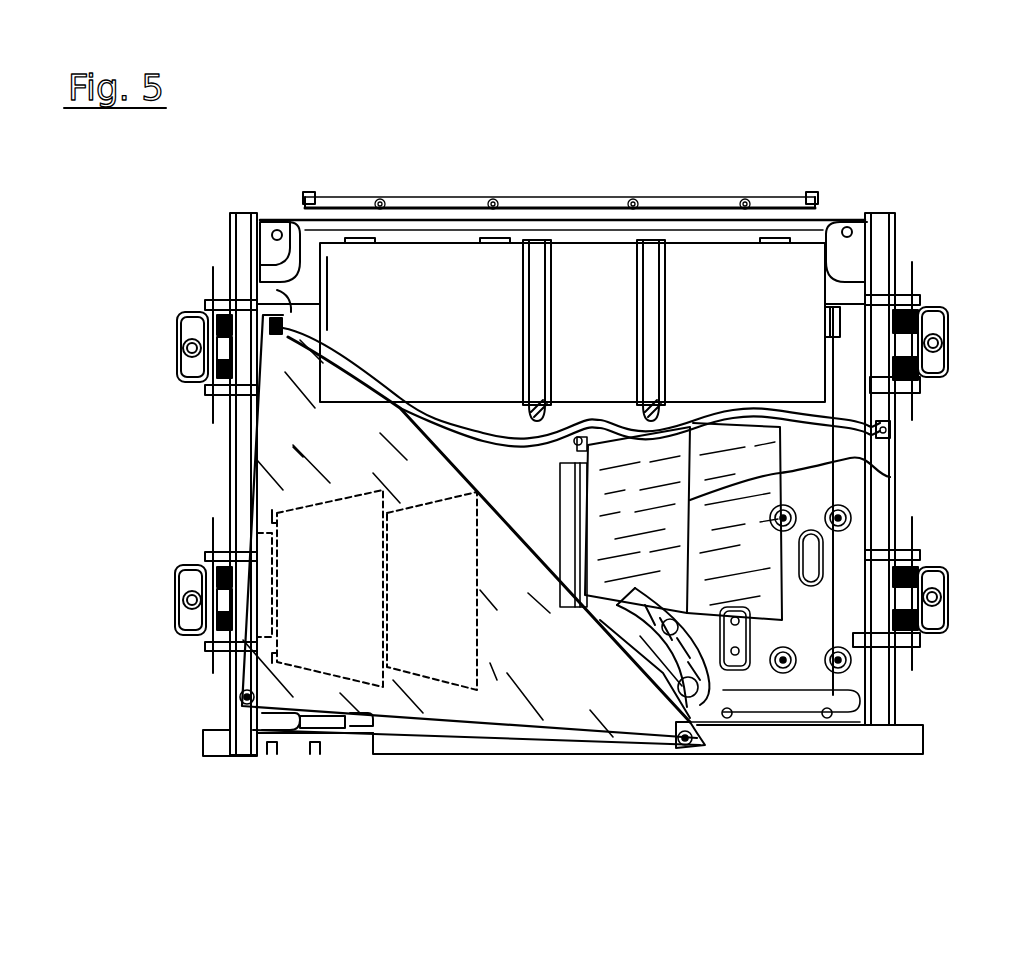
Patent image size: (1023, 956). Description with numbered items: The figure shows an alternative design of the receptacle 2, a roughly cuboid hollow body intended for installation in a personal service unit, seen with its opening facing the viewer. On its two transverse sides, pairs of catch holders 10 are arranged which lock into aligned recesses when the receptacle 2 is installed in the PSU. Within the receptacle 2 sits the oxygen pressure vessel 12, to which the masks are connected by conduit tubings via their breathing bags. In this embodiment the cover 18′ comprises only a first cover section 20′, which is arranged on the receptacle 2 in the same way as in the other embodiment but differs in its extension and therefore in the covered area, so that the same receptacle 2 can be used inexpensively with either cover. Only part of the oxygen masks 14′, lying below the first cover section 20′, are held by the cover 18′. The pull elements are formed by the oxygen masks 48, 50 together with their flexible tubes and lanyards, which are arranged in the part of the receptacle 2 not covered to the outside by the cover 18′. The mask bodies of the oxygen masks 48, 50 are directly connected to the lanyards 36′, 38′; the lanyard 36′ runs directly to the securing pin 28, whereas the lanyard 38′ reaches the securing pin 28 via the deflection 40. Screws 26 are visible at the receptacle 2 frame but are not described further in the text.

The receptacle 2 is at (733, 195).
The catch holder 10 is at (190, 340).
The oxygen pressure vessel 12 is at (421, 327).
The oxygen masks 14′ is at (360, 670).
The cover 18′ is at (465, 710).
The first cover section 20′ is at (585, 702).
The screws 26 is at (240, 698).
The securing pin 28 is at (282, 262).
The lanyard 36′ is at (367, 414).
The lanyard 38′ is at (862, 470).
The deflection 40 is at (892, 425).
The oxygen mask 48 is at (637, 590).
The oxygen mask 50 is at (780, 600).